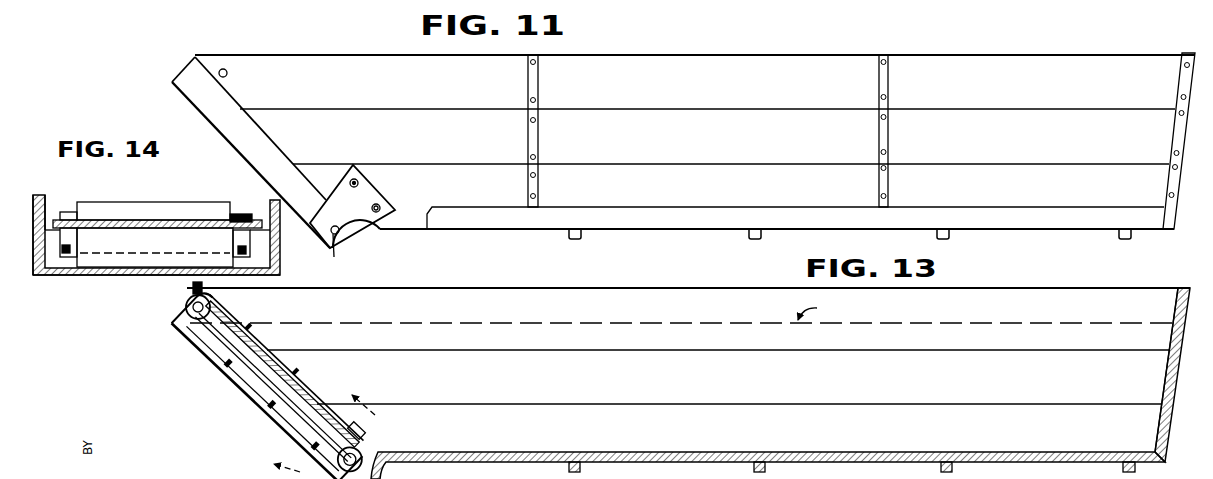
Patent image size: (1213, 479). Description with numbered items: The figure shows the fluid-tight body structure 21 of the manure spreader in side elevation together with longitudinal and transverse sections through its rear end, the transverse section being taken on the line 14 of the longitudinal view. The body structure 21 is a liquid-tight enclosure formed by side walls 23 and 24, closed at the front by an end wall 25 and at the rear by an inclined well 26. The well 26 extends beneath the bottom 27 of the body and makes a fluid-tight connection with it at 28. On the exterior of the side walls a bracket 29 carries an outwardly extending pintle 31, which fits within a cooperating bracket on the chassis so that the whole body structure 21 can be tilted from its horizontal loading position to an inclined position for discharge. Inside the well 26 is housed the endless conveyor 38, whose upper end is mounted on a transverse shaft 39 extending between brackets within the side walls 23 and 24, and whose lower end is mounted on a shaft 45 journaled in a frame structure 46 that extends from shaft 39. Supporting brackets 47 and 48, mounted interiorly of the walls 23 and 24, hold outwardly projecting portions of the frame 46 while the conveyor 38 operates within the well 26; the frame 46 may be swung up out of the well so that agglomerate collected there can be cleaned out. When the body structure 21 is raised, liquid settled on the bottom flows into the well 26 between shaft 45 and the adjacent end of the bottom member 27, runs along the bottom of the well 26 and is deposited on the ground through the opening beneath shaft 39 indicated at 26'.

In FIG. 13, the spray nozzle 14 is at (355, 433).
In FIG. 11, the body structure 21 is at (695, 146).
In FIG. 13, the body structure 21 is at (688, 371).
In FIG. 14, the side wall 23 is at (171, 246).
In FIG. 13, the side wall 23 is at (990, 293).
In FIG. 11, the side wall 24 is at (1032, 67).
In FIG. 14, the side wall 24 is at (35, 275).
In FIG. 11, the end wall 25 is at (1168, 182).
In FIG. 13, the end wall 25 is at (1163, 372).
In FIG. 11, the inclined well 26 is at (251, 134).
In FIG. 14, the inclined well 26 is at (156, 295).
In FIG. 13, the inclined well 26 is at (288, 380).
In FIG. 13, the opening 26' is at (262, 398).
In FIG. 11, the bottom 27 is at (498, 234).
In FIG. 13, the bottom 27 is at (498, 454).
In FIG. 11, the fluid-tight connection 28 is at (372, 249).
In FIG. 11, the bracket 29 is at (367, 188).
In FIG. 11, the pintle 31 is at (346, 255).
In FIG. 14, the endless conveyor 38 is at (70, 213).
In FIG. 13, the endless conveyor 38 is at (285, 369).
In FIG. 11, the transverse shaft 39 is at (227, 69).
In FIG. 13, the transverse shaft 39 is at (185, 312).
In FIG. 13, the shaft 45 is at (350, 459).
In FIG. 14, the frame structure 46 is at (130, 223).
In FIG. 13, the frame structure 46 is at (273, 387).
In FIG. 14, the supporting bracket 47 is at (267, 217).
In FIG. 13, the supporting bracket 47 is at (357, 431).
In FIG. 14, the supporting bracket 48 is at (50, 213).